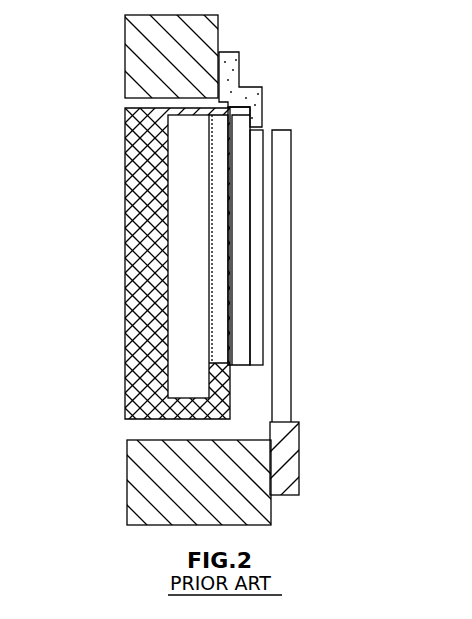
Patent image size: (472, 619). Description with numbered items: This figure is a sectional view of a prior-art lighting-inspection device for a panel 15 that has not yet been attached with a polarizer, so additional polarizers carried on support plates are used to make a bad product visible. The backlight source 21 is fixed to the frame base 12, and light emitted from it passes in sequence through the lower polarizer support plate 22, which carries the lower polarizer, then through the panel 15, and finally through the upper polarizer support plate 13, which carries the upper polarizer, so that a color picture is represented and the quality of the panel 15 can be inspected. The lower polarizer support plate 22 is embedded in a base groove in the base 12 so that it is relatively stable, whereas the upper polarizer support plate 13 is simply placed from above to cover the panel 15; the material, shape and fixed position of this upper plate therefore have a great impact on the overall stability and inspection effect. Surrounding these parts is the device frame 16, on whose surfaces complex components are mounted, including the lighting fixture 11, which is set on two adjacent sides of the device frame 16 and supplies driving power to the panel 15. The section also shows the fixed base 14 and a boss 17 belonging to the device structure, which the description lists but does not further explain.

The lighting fixture 11 is at (228, 72).
The frame base 12 is at (130, 186).
The upper polarizer support plate 13 is at (280, 245).
The fixed base 14 is at (283, 461).
The panel 15 is at (250, 178).
The device frame 16 is at (150, 49).
The boss 17 is at (255, 115).
The backlight source 21 is at (185, 275).
The lower polarizer support plate 22 is at (223, 343).